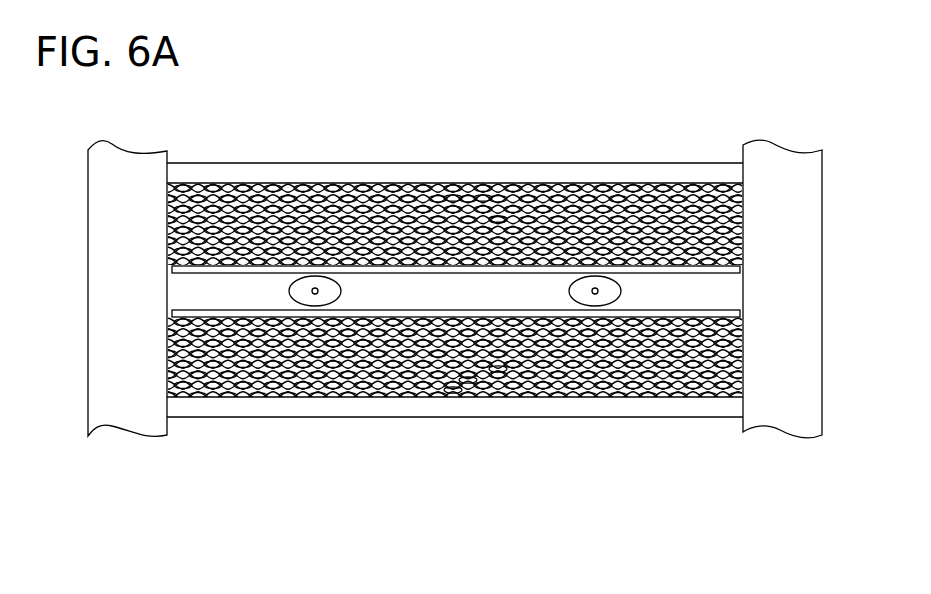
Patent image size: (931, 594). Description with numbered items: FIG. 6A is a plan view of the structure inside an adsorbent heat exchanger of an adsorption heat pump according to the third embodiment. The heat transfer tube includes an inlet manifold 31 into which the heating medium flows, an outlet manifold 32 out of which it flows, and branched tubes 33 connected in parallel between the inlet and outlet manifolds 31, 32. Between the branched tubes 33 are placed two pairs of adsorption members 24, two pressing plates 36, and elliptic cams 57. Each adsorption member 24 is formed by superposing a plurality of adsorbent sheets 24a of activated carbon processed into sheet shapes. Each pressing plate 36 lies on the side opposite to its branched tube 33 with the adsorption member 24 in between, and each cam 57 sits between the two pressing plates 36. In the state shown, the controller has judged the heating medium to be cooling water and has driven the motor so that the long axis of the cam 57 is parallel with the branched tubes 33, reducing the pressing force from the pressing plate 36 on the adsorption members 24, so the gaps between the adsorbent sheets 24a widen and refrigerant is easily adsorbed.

The adsorption member 24 is at (296, 187).
The adsorbent sheet 24a is at (490, 215).
The inlet manifold 31 is at (127, 148).
The outlet manifold 32 is at (788, 160).
The branched tube 33 is at (674, 170).
The pressing plate 36 is at (437, 273).
The cam 57 is at (342, 291).